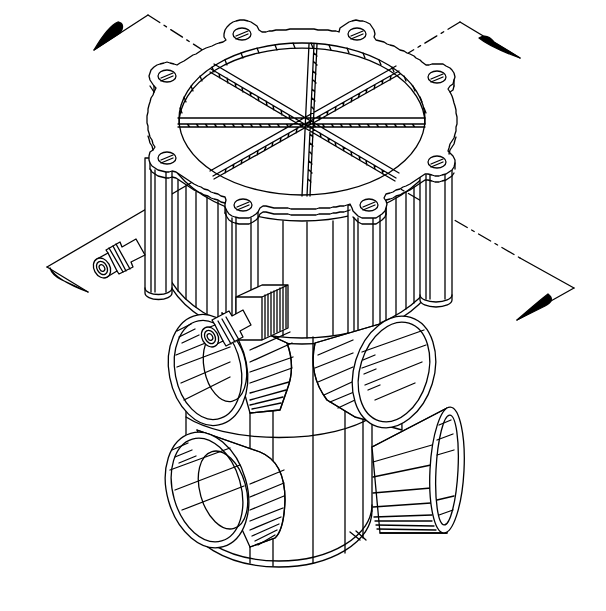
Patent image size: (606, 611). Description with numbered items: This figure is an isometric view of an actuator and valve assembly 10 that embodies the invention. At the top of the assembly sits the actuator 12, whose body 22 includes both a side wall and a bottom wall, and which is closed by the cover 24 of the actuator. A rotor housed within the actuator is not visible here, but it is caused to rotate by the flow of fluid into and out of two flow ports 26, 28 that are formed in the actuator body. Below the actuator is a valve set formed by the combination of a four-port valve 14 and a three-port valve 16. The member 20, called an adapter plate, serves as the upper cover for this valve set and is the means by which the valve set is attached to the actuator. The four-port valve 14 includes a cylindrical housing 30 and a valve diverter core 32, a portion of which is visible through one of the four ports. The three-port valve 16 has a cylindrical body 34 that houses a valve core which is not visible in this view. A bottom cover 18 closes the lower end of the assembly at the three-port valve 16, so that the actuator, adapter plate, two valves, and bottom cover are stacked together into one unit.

The actuator and valve assembly 10 is at (131, 108).
The actuator 12 is at (386, 197).
The four-port valve 14 is at (437, 357).
The three-port valve 16 is at (463, 481).
The bottom cover 18 is at (355, 560).
The adapter plate 20 is at (450, 302).
The body of the actuator 22 is at (155, 196).
The cover of the actuator 24 is at (437, 110).
The flow port 26 is at (101, 282).
The flow port 28 is at (213, 359).
The cylindrical housing 30 is at (293, 412).
The valve diverter core 32 is at (380, 366).
The cylindrical body of the three-port valve 34 is at (355, 528).